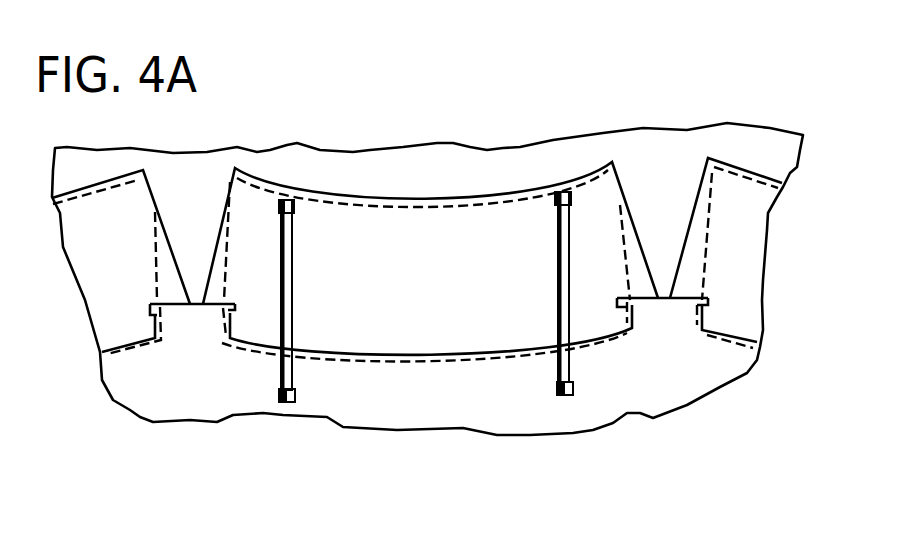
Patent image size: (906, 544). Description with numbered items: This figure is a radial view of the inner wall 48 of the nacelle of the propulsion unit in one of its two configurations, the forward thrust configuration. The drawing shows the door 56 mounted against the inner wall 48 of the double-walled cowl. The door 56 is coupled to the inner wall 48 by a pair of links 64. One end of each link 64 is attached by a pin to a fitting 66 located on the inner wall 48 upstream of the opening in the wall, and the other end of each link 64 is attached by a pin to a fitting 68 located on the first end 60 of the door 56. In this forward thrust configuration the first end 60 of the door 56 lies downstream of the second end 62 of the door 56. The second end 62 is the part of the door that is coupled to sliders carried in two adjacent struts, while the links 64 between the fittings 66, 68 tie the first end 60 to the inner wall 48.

The inner wall 48 is at (582, 415).
The door 56 is at (408, 265).
The first end 60 is at (410, 222).
The second end 62 is at (415, 340).
The link 64 is at (292, 273).
The fitting 66 is at (294, 392).
The fitting 68 is at (280, 207).